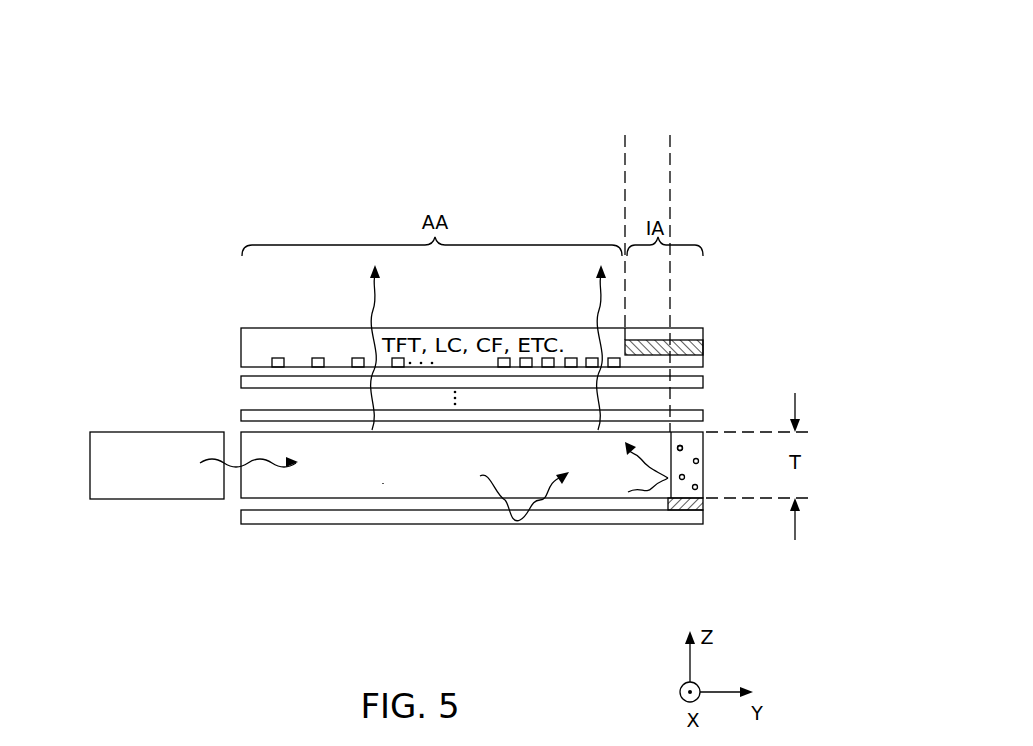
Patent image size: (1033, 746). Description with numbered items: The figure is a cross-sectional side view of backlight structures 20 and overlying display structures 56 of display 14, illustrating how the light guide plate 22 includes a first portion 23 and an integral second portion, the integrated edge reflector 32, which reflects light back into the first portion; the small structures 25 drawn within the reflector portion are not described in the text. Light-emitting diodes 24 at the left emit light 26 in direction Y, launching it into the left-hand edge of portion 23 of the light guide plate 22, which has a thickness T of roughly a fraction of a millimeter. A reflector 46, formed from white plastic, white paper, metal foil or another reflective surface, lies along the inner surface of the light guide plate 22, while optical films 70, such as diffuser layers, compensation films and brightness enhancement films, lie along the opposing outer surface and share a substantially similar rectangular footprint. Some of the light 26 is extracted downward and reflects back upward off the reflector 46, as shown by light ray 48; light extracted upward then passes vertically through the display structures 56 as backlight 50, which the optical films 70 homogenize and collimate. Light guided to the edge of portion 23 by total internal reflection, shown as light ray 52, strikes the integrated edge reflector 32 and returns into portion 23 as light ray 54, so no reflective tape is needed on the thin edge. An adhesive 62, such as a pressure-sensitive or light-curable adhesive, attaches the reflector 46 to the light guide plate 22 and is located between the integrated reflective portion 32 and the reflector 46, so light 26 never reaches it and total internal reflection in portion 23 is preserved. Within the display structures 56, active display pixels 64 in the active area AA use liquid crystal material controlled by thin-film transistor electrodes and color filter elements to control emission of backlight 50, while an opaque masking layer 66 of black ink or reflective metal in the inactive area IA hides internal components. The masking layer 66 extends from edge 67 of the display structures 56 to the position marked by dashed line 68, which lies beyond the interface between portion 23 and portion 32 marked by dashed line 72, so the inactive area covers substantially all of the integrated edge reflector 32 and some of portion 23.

The display 14 is at (646, 56).
The backlight structures 20 is at (68, 378).
The light guide plate 22 is at (328, 498).
The portion of light guide plate 23 is at (383, 483).
The light-emitting diodes 24 is at (155, 486).
The light scattering structures 25 is at (700, 487).
The light 26 is at (275, 466).
The integrated edge reflector 32 is at (700, 453).
The reflector 46 is at (612, 516).
The light ray 48 is at (560, 497).
The backlight 50 is at (378, 312).
The light ray 52 is at (650, 482).
The light ray 54 is at (642, 461).
The display structures 56 is at (273, 338).
The adhesive 62 is at (705, 502).
The active display pixels 64 is at (272, 358).
The opaque masking layer 66 is at (705, 347).
The edge of display structures 67 is at (705, 330).
The dashed line 68 is at (623, 164).
The optical films 70 is at (712, 376).
The dashed line 72 is at (672, 165).